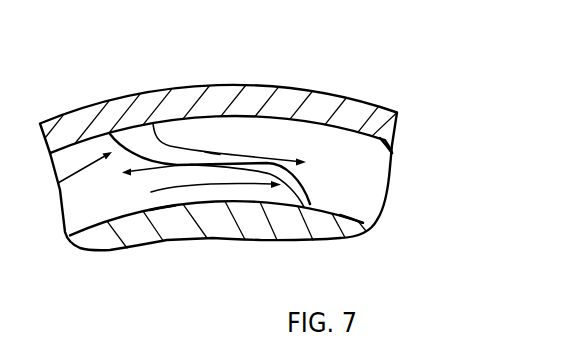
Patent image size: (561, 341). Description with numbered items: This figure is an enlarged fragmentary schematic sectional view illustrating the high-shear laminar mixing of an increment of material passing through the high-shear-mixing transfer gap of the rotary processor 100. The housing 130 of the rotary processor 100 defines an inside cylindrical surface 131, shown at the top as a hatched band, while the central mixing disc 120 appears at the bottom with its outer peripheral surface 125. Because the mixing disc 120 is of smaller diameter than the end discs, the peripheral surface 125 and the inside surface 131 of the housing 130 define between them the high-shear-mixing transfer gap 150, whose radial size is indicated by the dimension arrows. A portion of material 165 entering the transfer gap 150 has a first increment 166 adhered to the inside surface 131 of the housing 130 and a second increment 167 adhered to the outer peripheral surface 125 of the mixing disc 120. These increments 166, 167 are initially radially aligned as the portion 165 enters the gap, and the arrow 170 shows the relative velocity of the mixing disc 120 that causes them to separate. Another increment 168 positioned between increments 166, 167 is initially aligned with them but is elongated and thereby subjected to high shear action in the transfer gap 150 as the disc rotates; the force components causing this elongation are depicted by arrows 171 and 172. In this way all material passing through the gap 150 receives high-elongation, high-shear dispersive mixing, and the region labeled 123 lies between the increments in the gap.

The rotary processor 100 is at (340, 65).
The housing 130 is at (362, 98).
The inside cylindrical surface 131 is at (394, 154).
The central mixing disc 120 is at (101, 243).
The peripheral surface 125 is at (364, 221).
The high-shear-mixing transfer gap 150 is at (353, 162).
The portion of material 165 is at (55, 184).
The first increment 166 is at (143, 126).
The blade suction surface 123 is at (178, 152).
The another increment 168 is at (213, 155).
The arrow 172 is at (268, 160).
The second increment 167 is at (293, 201).
The arrow 170 is at (208, 184).
The arrow 171 is at (162, 166).